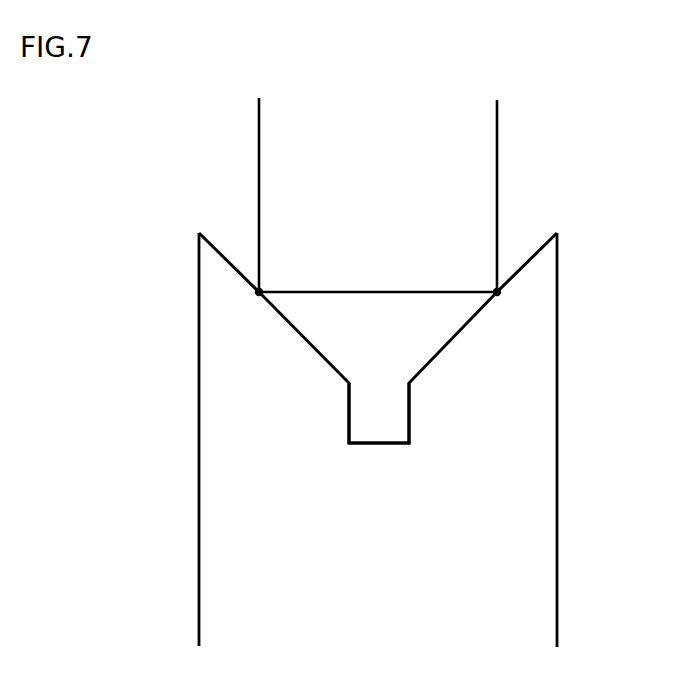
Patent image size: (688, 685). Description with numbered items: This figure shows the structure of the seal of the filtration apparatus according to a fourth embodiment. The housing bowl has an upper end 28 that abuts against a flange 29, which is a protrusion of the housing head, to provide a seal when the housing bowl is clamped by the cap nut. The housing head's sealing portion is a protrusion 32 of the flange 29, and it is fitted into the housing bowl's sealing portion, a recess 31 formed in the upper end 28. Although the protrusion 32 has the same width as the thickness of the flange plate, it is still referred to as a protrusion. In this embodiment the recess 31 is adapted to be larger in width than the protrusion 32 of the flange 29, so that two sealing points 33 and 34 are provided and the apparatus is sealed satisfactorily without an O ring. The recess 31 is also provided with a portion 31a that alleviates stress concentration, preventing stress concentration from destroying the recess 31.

The upper end 28 is at (502, 488).
The flange 29 is at (328, 150).
The recess 31 is at (427, 368).
The portion alleviating stress concentration 31a is at (410, 423).
The protrusion 32 is at (379, 280).
The sealing point 33 is at (259, 292).
The sealing point 34 is at (497, 292).